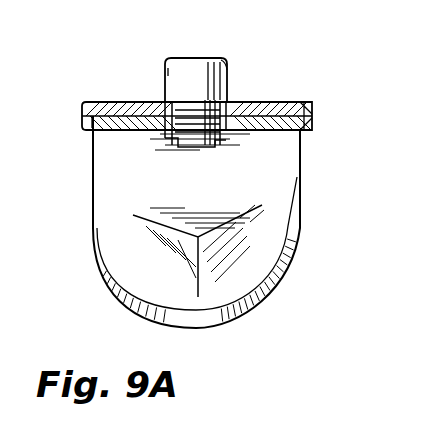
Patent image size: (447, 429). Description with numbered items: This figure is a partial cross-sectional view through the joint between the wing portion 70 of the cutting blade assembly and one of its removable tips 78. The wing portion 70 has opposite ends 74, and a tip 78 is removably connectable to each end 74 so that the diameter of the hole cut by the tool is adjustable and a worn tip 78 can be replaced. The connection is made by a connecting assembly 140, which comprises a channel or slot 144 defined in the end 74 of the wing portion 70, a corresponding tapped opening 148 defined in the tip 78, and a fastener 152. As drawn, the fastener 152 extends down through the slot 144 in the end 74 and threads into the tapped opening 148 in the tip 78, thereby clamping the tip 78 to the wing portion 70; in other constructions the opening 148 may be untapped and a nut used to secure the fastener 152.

The wing portion 70 is at (312, 102).
The end 74 is at (118, 106).
The tip 78 is at (265, 223).
The slot 144 is at (188, 102).
The fastener 152 is at (229, 76).
The connecting assembly 140 is at (238, 85).
The opening 148 is at (192, 135).